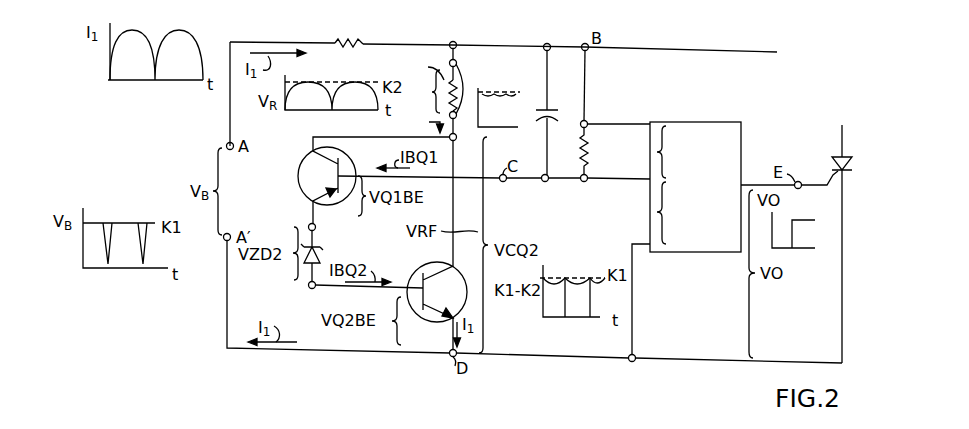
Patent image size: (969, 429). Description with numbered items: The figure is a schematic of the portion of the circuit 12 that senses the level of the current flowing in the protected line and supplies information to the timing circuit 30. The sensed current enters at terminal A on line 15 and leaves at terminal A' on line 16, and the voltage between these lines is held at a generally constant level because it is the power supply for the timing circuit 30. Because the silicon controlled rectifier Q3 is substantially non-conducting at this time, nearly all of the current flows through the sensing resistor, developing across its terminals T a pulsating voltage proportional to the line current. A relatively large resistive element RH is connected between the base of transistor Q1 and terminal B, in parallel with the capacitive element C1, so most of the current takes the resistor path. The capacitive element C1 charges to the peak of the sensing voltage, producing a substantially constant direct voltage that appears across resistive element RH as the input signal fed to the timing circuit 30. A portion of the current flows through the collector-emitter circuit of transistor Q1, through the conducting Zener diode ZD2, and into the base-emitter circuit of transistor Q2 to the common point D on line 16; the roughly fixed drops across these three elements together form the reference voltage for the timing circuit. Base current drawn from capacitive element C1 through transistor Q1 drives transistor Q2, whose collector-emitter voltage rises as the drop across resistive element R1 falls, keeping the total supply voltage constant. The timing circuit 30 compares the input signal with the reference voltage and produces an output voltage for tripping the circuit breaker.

The circuit 12 is at (510, 41).
The line 15 is at (257, 42).
The line 16 is at (273, 349).
The timing circuit 30 is at (697, 123).
The resistive element R1 is at (357, 44).
The terminal T is at (459, 95).
The capacitive element C1 is at (551, 109).
The resistive element RH is at (599, 151).
The transistor Q1 is at (300, 188).
The transistor Q2 is at (420, 322).
The silicon controlled rectifier Q3 is at (848, 164).
The Zener diode ZD2 is at (321, 248).